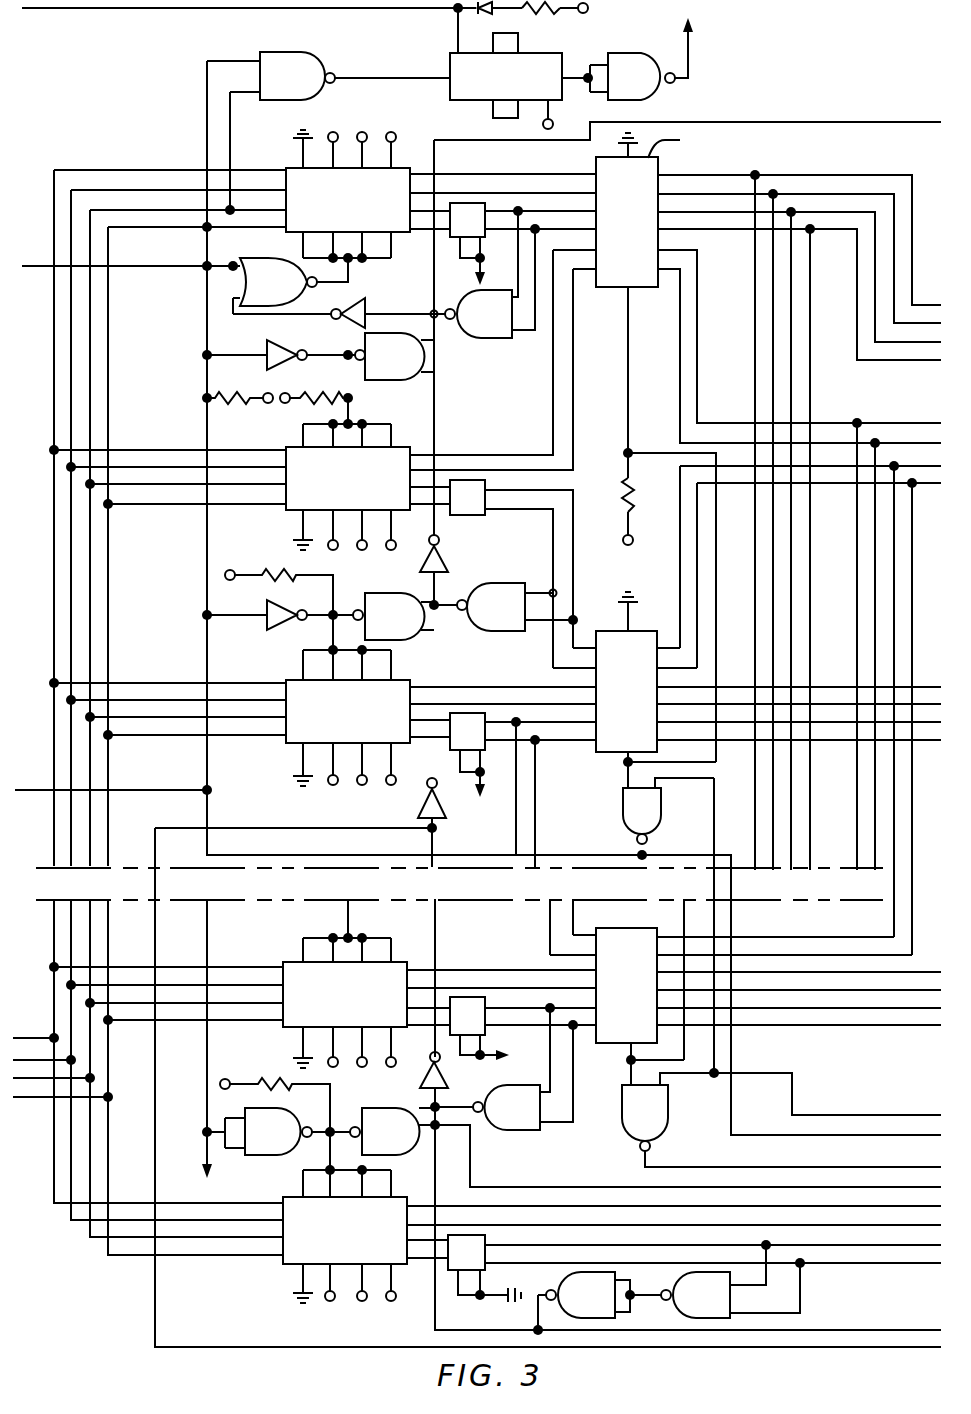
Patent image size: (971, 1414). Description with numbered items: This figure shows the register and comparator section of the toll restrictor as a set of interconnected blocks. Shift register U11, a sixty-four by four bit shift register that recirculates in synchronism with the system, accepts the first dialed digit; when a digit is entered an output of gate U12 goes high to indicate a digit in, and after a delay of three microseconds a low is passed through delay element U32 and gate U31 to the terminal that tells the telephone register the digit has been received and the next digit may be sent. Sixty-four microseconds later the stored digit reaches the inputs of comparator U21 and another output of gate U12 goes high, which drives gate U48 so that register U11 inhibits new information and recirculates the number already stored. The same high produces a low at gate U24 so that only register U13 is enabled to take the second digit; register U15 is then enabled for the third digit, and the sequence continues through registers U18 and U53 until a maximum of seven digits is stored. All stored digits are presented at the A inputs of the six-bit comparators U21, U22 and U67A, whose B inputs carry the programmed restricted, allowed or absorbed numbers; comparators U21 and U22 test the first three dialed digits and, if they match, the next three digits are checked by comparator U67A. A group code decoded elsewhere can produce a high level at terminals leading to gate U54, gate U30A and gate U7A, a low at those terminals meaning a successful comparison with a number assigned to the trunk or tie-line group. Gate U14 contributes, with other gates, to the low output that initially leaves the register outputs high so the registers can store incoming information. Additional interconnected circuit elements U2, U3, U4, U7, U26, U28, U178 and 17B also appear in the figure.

The gate U12 is at (390, 337).
The delay element U32 is at (520, 81).
The gate U31 is at (659, 59).
The shift register U11 is at (428, 196).
The buffer U2 is at (523, 435).
The six-bit comparator U21 is at (625, 288).
The gate U48 is at (290, 286).
The inverter U7 is at (368, 305).
The gate U24 is at (318, 485).
The shift register U13 is at (249, 501).
The six-bit comparator U22 is at (675, 709).
The shift register U15 is at (249, 715).
The buffer U3 is at (467, 755).
The gate U7A is at (668, 819).
The gate U14 is at (440, 820).
The shift register U18 is at (322, 1000).
The buffer U4 is at (523, 1028).
The six-bit comparator U67A is at (745, 1006).
The NAND gate U26 is at (501, 1069).
The NAND gate U28 is at (574, 1119).
The gate U30A is at (622, 1128).
The shift register U53 is at (612, 1234).
The gate U54 is at (689, 1263).
The NAND gate U178 is at (599, 1301).
The NAND gate 17B is at (730, 1284).